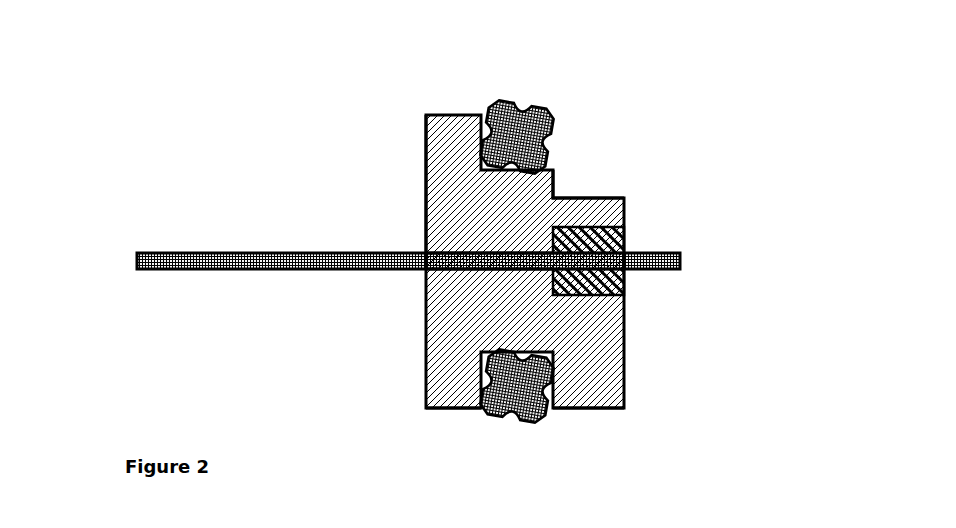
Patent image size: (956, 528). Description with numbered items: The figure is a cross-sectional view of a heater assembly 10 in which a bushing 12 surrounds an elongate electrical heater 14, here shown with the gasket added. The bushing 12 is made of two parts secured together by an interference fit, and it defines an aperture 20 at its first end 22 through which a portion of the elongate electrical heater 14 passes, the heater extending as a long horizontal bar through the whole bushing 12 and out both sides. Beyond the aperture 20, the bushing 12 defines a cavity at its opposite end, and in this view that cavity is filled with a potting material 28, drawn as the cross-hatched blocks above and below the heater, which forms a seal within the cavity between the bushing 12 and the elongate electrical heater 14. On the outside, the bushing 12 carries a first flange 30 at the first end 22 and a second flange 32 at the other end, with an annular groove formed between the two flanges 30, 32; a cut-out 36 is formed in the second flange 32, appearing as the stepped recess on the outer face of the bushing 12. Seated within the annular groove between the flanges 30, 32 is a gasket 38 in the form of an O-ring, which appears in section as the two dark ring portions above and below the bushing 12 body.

The heater assembly 10 is at (210, 142).
The bushing 12 is at (602, 353).
The elongate electrical heater 14 is at (228, 271).
The aperture 20 is at (450, 273).
The first end 22 is at (426, 143).
The potting material 28 is at (607, 240).
The first flange 30 is at (448, 388).
The second flange 32 is at (583, 397).
The cut-out 36 is at (582, 182).
The gasket 38 is at (525, 123).